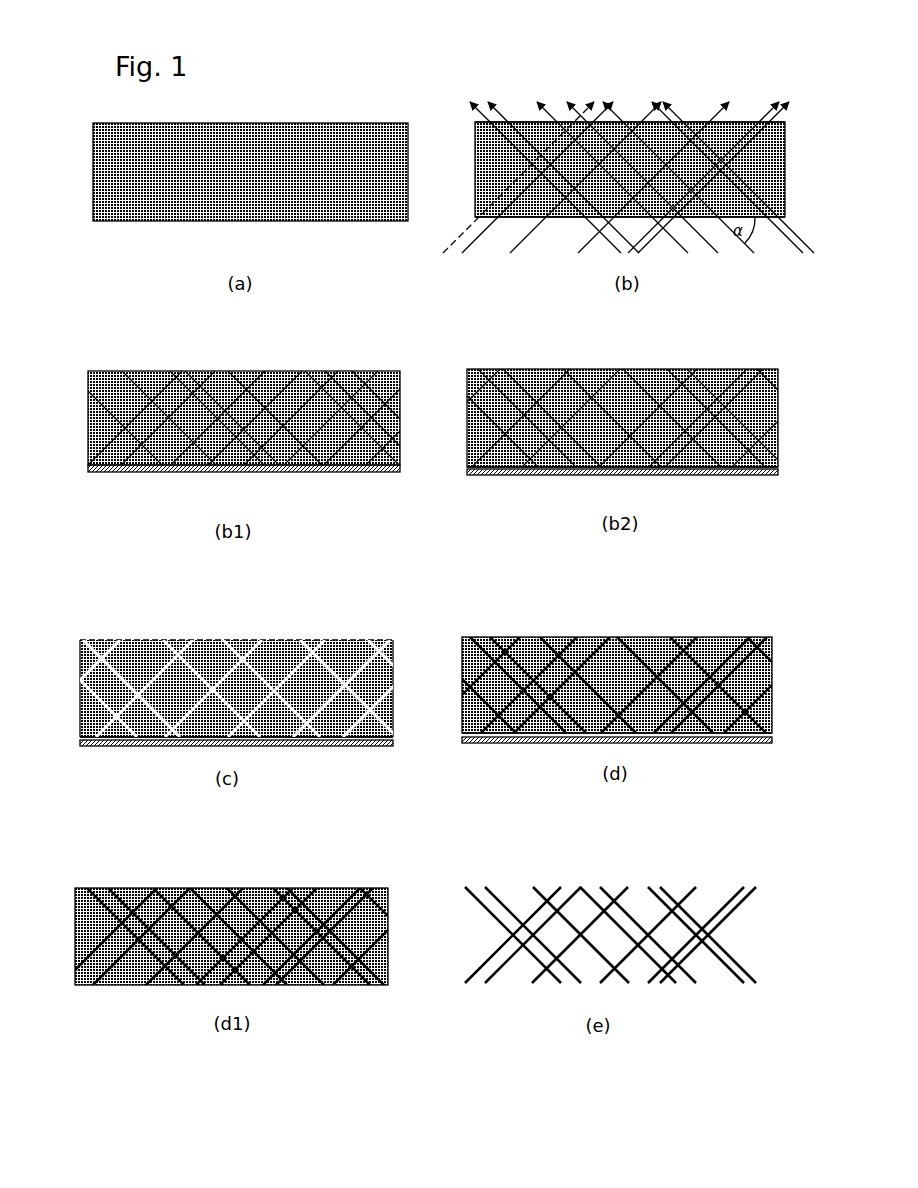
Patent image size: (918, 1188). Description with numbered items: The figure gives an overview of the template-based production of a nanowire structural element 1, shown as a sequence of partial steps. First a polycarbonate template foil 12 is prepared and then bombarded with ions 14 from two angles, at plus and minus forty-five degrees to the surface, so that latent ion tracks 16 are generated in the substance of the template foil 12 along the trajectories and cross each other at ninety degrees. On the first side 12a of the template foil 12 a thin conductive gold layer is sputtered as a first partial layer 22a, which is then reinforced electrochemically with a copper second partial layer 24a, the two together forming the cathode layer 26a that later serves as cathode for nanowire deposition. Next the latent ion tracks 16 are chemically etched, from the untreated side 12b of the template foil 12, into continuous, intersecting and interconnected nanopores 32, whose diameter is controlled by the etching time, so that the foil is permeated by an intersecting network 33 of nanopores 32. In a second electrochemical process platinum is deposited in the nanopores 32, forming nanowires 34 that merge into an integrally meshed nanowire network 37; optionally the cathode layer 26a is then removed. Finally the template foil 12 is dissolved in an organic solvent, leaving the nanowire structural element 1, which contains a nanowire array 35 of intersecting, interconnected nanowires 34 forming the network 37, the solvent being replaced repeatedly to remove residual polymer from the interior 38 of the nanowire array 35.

The nanowire structural element 1 is at (712, 1005).
The template foil 12 is at (93, 170).
The first side of the template foil 12a is at (560, 220).
The untreated side of the template foil 12b is at (696, 118).
The ions 14 is at (790, 227).
The latent ion tracks 16 is at (100, 386).
The first partial layer 22a is at (88, 468).
The second partial layer 24a is at (467, 473).
The cathode layer 26a is at (784, 462).
The nanopores 32 is at (102, 649).
The intersecting network of nanopores 33 is at (290, 634).
The nanowires 34 is at (514, 652).
The nanowire array 35 is at (755, 921).
The nanowire network 37 is at (268, 885).
The interior of the nanowire array 38 is at (588, 963).